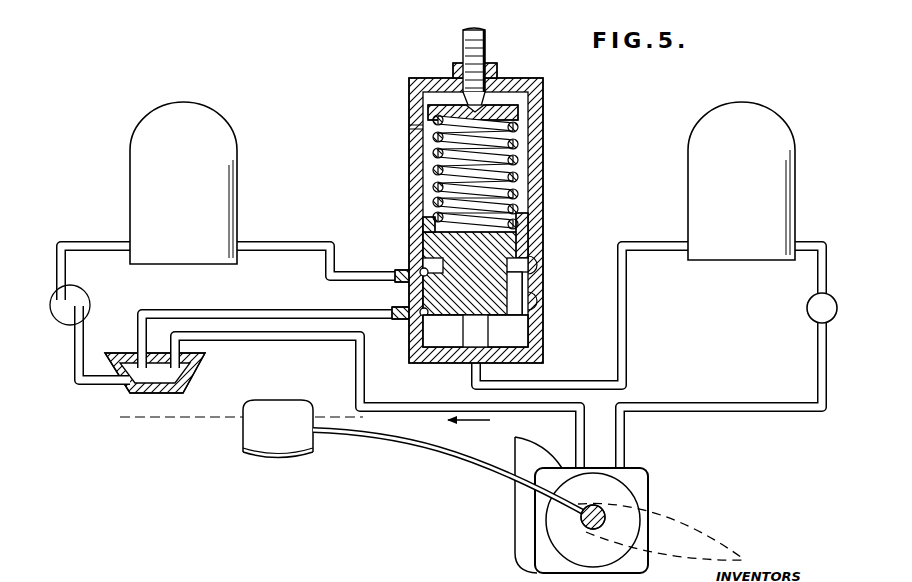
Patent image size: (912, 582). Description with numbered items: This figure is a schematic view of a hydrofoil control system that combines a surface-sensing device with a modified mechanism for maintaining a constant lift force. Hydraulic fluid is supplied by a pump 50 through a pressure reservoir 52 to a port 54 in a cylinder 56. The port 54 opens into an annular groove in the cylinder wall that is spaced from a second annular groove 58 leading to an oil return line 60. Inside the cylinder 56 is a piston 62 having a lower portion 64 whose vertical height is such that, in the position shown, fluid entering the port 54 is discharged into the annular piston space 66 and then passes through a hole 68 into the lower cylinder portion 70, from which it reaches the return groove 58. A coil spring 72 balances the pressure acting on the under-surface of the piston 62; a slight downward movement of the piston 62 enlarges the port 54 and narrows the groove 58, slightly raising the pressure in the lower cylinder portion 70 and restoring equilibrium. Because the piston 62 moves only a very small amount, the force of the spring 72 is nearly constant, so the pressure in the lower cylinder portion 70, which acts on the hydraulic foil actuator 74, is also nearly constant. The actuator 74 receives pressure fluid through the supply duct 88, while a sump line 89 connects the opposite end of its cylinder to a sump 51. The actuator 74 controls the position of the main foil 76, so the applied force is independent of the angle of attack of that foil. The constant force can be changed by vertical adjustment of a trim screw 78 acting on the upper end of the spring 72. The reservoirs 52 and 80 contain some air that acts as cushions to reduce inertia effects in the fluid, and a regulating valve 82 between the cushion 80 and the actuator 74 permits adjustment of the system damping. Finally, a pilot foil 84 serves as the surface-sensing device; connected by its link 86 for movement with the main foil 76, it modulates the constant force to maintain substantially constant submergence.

The pump 50 is at (88, 300).
The sump 51 is at (200, 366).
The pressure reservoir 52 is at (185, 180).
The port 54 is at (415, 265).
The cylinder 56 is at (545, 163).
The second annular groove 58 is at (428, 318).
The oil return line 60 is at (328, 300).
The piston 62 is at (520, 245).
The lower portion 64 is at (478, 304).
The annular piston space 66 is at (530, 265).
The hole 68 is at (515, 295).
The lower cylinder portion 70 is at (522, 338).
The coil spring 72 is at (515, 148).
The hydraulic foil actuator 74 is at (623, 497).
The main foil 76 is at (690, 530).
The trim screw 78 is at (488, 41).
The reservoir 80 is at (745, 168).
The regulating valve 82 is at (806, 308).
The pilot foil 84 is at (290, 408).
The link 86 is at (420, 438).
The supply duct 88 is at (745, 396).
The sump line 89 is at (386, 405).